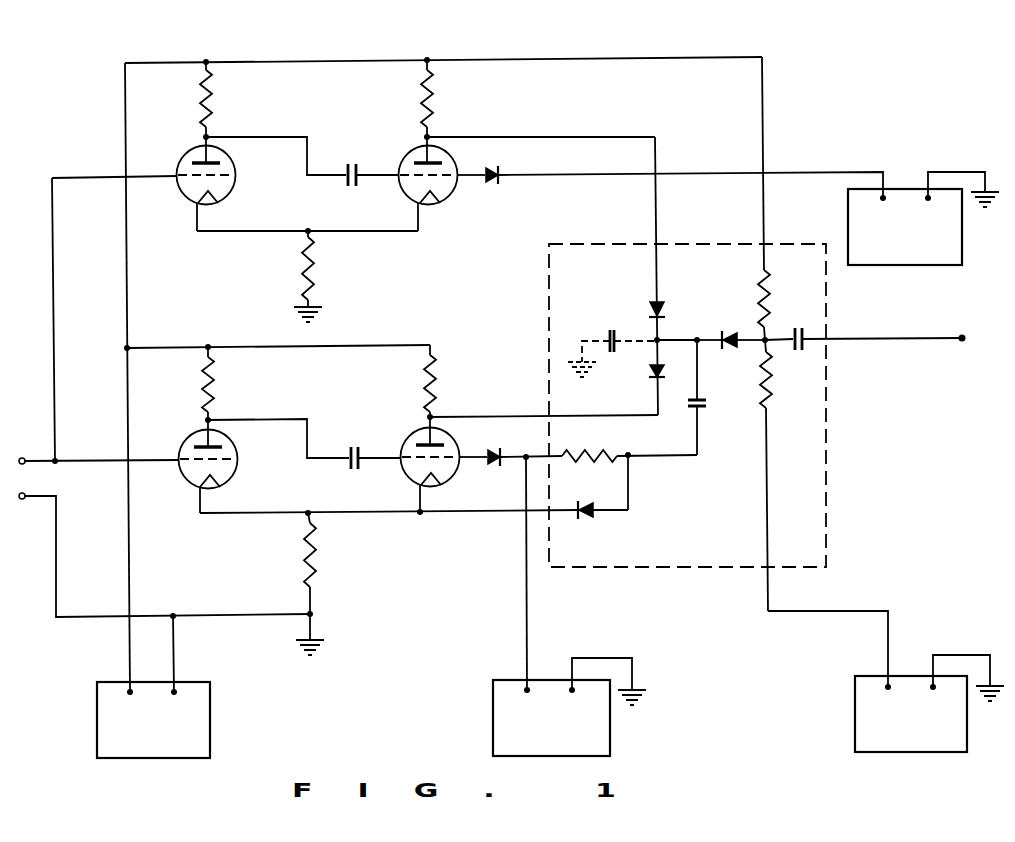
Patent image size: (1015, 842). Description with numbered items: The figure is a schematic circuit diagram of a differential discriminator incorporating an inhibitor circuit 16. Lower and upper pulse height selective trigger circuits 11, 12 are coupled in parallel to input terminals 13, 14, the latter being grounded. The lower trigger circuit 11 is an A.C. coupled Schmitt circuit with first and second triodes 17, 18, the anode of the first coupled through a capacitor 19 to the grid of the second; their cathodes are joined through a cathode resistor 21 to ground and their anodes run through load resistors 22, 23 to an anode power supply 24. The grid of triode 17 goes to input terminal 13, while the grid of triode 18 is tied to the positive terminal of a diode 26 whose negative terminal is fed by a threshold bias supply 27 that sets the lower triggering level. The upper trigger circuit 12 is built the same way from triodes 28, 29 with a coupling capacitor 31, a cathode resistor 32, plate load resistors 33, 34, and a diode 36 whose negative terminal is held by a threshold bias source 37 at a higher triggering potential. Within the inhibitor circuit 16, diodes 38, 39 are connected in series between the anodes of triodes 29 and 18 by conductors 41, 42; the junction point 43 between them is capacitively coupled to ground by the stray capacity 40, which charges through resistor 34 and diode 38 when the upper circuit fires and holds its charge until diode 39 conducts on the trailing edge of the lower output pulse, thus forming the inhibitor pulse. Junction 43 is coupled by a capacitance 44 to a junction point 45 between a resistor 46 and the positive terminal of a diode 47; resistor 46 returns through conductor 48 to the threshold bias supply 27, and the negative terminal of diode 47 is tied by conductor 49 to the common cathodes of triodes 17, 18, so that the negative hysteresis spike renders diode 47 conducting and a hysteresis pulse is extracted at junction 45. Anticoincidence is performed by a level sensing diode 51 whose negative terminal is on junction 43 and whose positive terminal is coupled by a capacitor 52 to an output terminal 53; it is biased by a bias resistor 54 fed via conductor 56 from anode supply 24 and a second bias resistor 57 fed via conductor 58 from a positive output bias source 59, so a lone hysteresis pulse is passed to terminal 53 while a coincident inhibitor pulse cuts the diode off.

The lower pulse height selective trigger circuit 11 is at (364, 323).
The upper pulse height selective trigger circuit 12 is at (346, 51).
The input terminal 13 is at (22, 457).
The input terminal 14 is at (22, 500).
The inhibitor circuit 16 is at (605, 241).
The first triode 17 is at (189, 439).
The second triode 18 is at (413, 437).
The capacitor 19 is at (351, 470).
The cathode resistor 21 is at (316, 561).
The load resistor 22 is at (215, 389).
The load resistor 23 is at (437, 387).
The anode power supply 24 is at (212, 718).
The diode 26 is at (494, 467).
The threshold bias supply 27 is at (493, 724).
The first triode 28 is at (186, 156).
The second triode 29 is at (412, 157).
The capacitor 31 is at (345, 182).
The cathode resistor 32 is at (300, 268).
The plate load resistor 33 is at (213, 107).
The plate load resistor 34 is at (435, 106).
The diode 36 is at (490, 184).
The threshold bias source 37 is at (918, 265).
The diode 38 is at (650, 307).
The diode 39 is at (650, 371).
The stray capacity 40 is at (606, 333).
The conductor 41 is at (660, 213).
The conductor 42 is at (500, 416).
The junction point 43 is at (662, 336).
The capacitance 44 is at (703, 408).
The junction point 45 is at (634, 460).
The resistor 46 is at (596, 450).
The diode 47 is at (590, 514).
The conductor 48 is at (538, 455).
The conductor 49 is at (513, 517).
The level sensing diode 51 is at (737, 333).
The capacitor 52 is at (793, 352).
The output terminal 53 is at (962, 343).
The bias resistor 54 is at (771, 302).
The conductor 56 is at (766, 213).
The second bias resistor 57 is at (771, 405).
The conductor 58 is at (832, 613).
The output bias source 59 is at (855, 720).